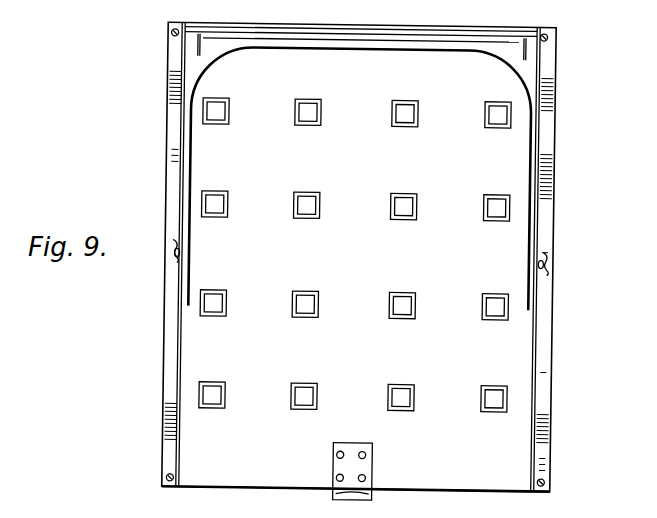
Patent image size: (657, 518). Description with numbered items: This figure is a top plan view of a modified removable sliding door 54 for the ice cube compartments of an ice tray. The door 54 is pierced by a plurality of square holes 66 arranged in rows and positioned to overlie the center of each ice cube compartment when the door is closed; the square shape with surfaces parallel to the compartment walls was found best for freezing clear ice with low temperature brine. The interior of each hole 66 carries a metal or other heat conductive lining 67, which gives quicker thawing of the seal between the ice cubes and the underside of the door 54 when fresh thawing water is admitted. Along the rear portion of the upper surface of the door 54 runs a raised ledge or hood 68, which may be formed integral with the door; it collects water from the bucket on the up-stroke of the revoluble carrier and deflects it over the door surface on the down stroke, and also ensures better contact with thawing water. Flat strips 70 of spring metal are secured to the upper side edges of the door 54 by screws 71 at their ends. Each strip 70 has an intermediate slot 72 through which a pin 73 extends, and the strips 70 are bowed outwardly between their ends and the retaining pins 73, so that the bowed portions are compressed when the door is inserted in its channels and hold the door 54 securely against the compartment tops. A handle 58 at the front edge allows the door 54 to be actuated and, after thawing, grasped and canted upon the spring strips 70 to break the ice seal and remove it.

The removable sliding door 54 is at (212, 475).
The handle 58 is at (362, 467).
The square holes 66 is at (305, 118).
The heat conductive lining 67 is at (400, 126).
The raised ledge or hood 68 is at (478, 42).
The flat strips of spring metal 70 is at (172, 124).
The screws 71 is at (169, 36).
The intermediate slots 72 is at (172, 243).
The pins 73 is at (172, 258).